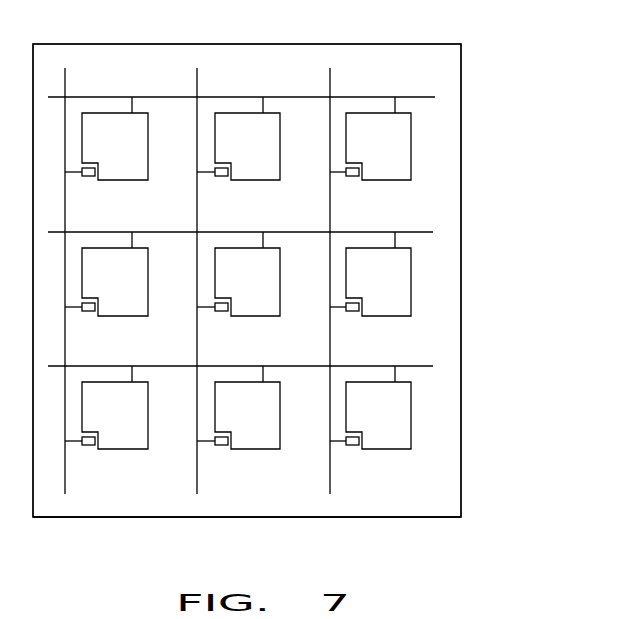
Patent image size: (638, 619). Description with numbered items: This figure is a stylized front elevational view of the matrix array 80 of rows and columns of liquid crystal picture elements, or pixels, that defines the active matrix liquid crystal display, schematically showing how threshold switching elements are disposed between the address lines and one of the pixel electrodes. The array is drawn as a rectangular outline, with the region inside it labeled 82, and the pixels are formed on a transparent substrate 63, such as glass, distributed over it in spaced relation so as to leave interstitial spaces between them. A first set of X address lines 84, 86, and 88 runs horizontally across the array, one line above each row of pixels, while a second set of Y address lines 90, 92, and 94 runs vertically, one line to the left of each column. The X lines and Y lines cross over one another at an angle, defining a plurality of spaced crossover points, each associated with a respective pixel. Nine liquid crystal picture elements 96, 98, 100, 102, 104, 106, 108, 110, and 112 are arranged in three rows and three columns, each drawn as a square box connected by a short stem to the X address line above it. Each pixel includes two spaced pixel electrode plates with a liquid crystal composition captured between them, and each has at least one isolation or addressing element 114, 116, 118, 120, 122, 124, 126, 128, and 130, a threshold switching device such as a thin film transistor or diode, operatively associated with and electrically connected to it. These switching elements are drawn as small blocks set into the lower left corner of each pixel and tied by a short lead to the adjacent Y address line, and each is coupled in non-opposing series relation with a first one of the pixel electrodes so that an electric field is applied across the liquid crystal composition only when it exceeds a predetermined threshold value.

The matrix array 80 is at (478, 55).
The substrate 82 is at (442, 174).
The transparent substrate 63 is at (440, 510).
The X address line 84 is at (435, 97).
The X address line 86 is at (433, 232).
The X address line 88 is at (433, 366).
The Y address line 90 is at (66, 79).
The Y address line 92 is at (198, 79).
The Y address line 94 is at (331, 79).
The liquid crystal picture element 96 is at (115, 138).
The liquid crystal picture element 98 is at (247, 138).
The liquid crystal picture element 100 is at (378, 138).
The liquid crystal picture element 102 is at (115, 274).
The liquid crystal picture element 104 is at (247, 274).
The liquid crystal picture element 106 is at (378, 274).
The liquid crystal picture element 108 is at (115, 407).
The liquid crystal picture element 110 is at (247, 407).
The liquid crystal picture element 112 is at (378, 407).
The isolation or addressing element 114 is at (88, 177).
The isolation or addressing element 116 is at (221, 177).
The isolation or addressing element 118 is at (352, 177).
The isolation or addressing element 120 is at (88, 312).
The isolation or addressing element 122 is at (221, 312).
The isolation or addressing element 124 is at (352, 312).
The isolation or addressing element 126 is at (88, 446).
The isolation or addressing element 128 is at (221, 446).
The isolation or addressing element 130 is at (352, 446).